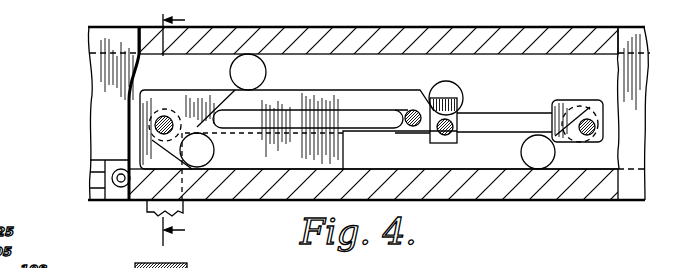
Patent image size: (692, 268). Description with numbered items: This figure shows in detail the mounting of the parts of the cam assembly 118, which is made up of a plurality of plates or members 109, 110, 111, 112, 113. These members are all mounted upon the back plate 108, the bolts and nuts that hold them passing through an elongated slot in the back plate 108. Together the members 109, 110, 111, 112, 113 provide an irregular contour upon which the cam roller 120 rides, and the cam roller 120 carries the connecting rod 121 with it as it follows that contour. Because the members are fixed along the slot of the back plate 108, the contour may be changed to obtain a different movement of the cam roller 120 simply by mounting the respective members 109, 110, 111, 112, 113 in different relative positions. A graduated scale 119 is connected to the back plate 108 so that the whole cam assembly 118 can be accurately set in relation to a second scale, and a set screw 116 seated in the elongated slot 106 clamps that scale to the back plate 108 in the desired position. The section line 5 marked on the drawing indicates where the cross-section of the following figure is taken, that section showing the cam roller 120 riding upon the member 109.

The section line 5 is at (181, 130).
The elongated slot 106 is at (93, 178).
The back plate 108 is at (575, 196).
The member 109 is at (143, 153).
The member 110 is at (200, 122).
The member 111 is at (310, 78).
The member 112 is at (397, 77).
The member 113 is at (530, 102).
The set screw 116 is at (118, 186).
The cam assembly 118 is at (510, 78).
The graduated scale 119 is at (648, 171).
The cam roller 120 is at (150, 110).
The connecting rod 121 is at (184, 210).